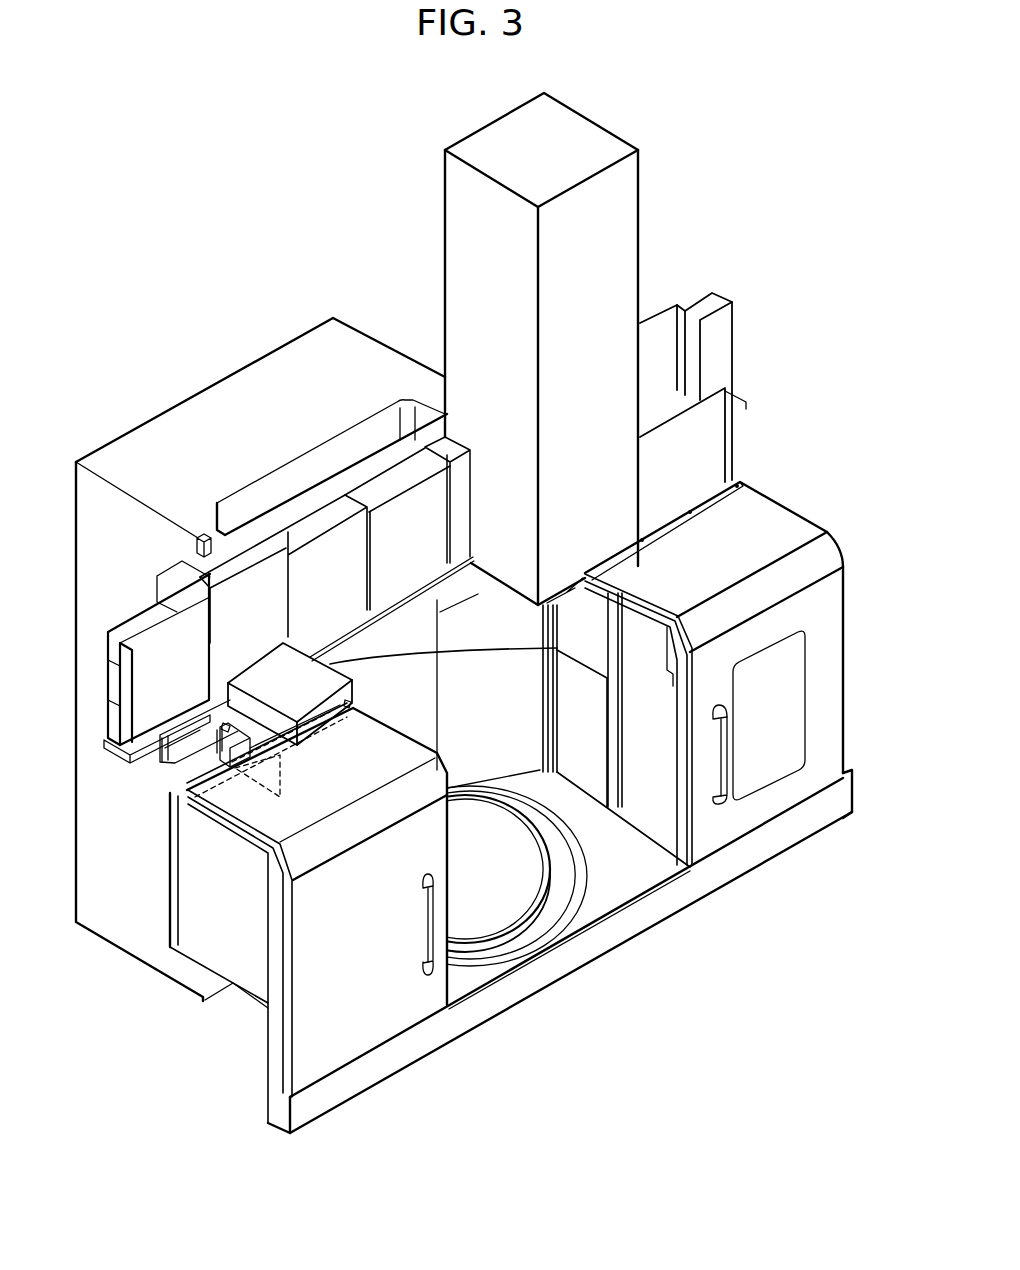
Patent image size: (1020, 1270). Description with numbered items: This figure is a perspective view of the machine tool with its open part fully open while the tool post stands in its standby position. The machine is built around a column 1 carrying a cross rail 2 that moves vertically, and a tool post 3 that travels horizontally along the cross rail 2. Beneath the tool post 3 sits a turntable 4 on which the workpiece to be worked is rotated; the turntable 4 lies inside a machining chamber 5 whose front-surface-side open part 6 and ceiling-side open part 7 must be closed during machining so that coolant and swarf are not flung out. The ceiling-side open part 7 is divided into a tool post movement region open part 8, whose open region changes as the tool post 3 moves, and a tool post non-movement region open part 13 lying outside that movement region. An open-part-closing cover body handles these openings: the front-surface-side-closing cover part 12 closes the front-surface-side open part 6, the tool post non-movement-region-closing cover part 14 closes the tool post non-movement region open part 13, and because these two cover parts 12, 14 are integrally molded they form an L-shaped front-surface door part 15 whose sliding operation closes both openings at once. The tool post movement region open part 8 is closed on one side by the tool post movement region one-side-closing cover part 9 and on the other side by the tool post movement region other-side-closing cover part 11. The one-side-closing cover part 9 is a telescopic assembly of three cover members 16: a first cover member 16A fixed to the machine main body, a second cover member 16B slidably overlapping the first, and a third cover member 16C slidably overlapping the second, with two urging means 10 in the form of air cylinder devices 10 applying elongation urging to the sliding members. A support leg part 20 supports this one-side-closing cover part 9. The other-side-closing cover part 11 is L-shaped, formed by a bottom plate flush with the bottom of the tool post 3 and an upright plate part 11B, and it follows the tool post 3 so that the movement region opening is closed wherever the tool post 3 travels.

The column 1 is at (243, 366).
The cross rail 2 is at (123, 700).
The tool post 3 is at (638, 184).
The turntable 4 is at (530, 838).
The machining chamber 5 is at (608, 817).
The front-surface-side open part 6 is at (600, 885).
The ceiling-side open part 7 is at (510, 666).
The tool post movement region open part 8 is at (421, 653).
The tool post movement region one-side-closing cover part 9 is at (167, 768).
The urging means 10 is at (287, 685).
The tool post movement region other-side-closing cover part 11 is at (740, 425).
The upright plate part 11B is at (734, 456).
The front-surface-side-closing cover part 12 is at (393, 1005).
The tool post non-movement region open part 13 is at (487, 672).
The tool post non-movement-region-closing cover part 14 is at (355, 748).
The front-surface door part 15 is at (283, 1014).
The cover members 16 is at (248, 821).
The first cover member 16A is at (173, 753).
The second cover member 16B is at (198, 734).
The third cover member 16C is at (300, 707).
The support leg part 20 is at (254, 782).